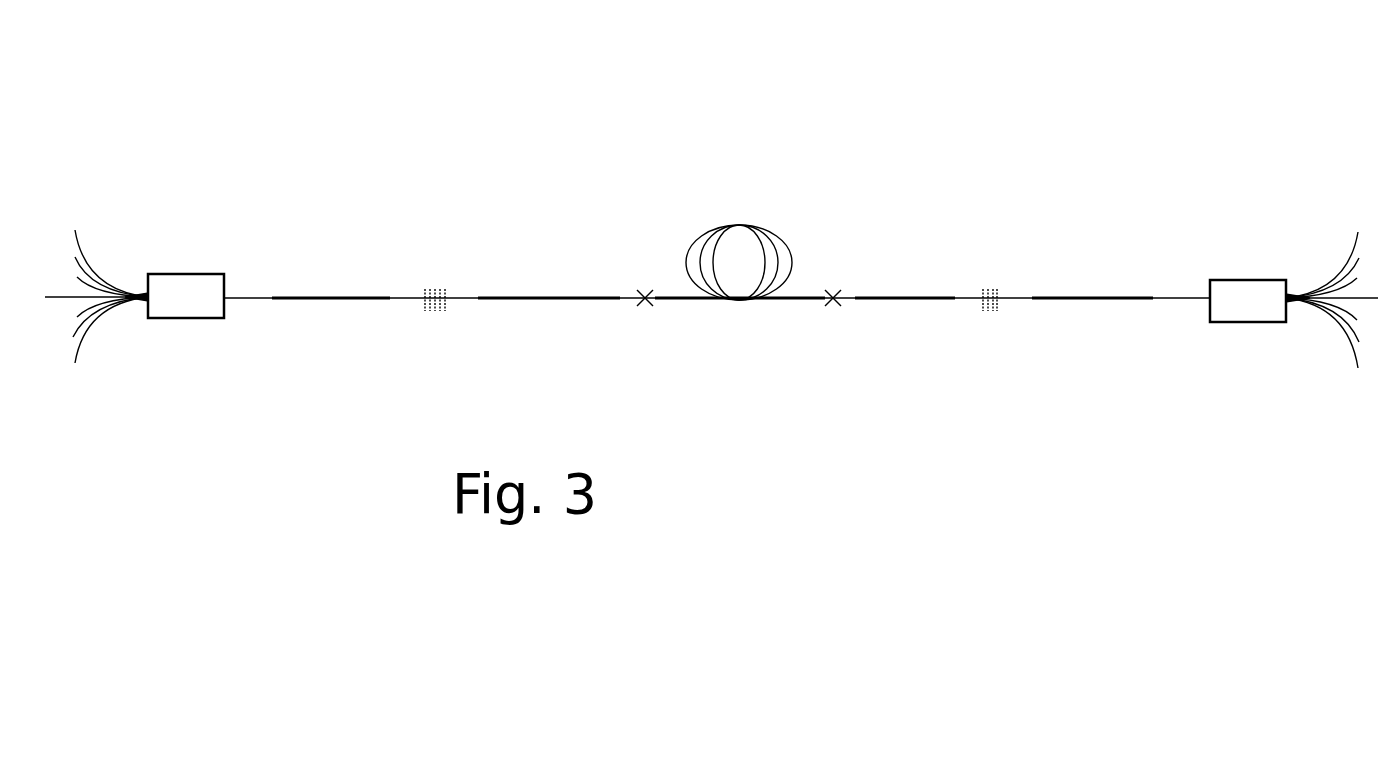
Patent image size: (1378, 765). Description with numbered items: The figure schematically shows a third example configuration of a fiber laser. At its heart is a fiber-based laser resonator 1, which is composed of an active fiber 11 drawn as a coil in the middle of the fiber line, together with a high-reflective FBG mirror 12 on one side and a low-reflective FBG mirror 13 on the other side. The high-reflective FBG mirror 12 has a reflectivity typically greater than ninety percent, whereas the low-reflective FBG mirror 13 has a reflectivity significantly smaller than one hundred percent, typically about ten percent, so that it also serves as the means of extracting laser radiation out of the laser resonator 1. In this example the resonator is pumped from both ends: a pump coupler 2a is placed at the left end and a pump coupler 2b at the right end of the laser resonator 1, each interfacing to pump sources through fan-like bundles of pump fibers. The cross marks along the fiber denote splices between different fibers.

The laser resonator 1 is at (720, 170).
The pump coupler 2a is at (183, 274).
The pump coupler 2b is at (1248, 282).
The active fiber 11 is at (738, 225).
The high-reflective FBG mirror 12 is at (470, 298).
The low-reflective FBG mirror 13 is at (963, 298).